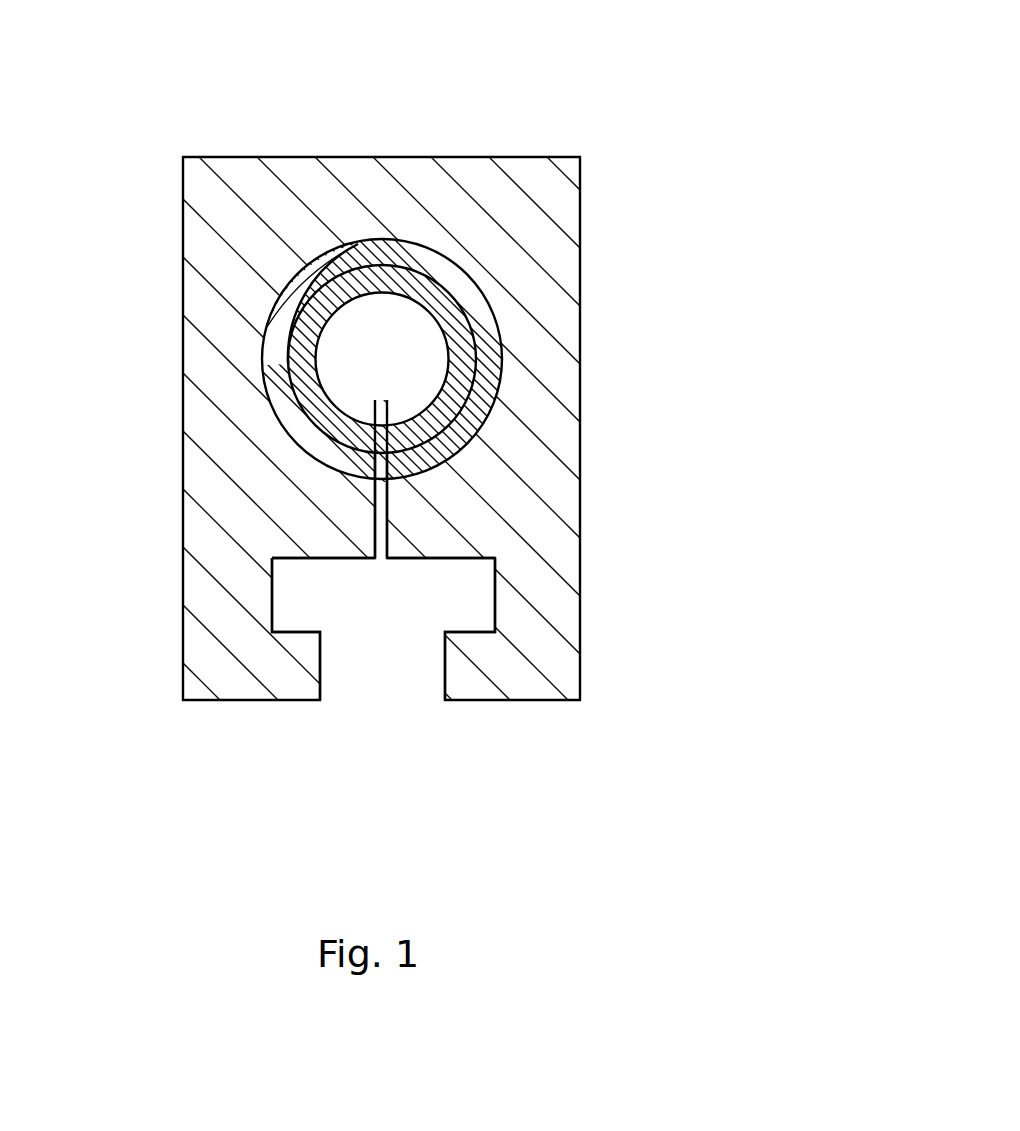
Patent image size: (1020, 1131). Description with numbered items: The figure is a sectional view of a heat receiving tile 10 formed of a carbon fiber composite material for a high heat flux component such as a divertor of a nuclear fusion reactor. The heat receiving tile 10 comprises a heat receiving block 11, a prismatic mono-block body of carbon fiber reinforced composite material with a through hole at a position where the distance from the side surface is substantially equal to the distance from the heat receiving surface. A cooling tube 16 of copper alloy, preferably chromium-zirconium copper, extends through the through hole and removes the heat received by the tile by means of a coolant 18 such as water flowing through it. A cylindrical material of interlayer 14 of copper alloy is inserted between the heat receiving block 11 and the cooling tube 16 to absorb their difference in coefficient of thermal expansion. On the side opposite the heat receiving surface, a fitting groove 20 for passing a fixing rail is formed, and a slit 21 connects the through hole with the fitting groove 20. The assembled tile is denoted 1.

The piping assembly 1 is at (357, 374).
The heat receiving tile 10 is at (510, 399).
The heat receiving block 11 is at (227, 247).
The material of interlayer 14 is at (277, 317).
The cooling tube 16 is at (297, 360).
The coolant 18 is at (350, 380).
The fitting groove 20 is at (315, 593).
The slit 21 is at (382, 567).